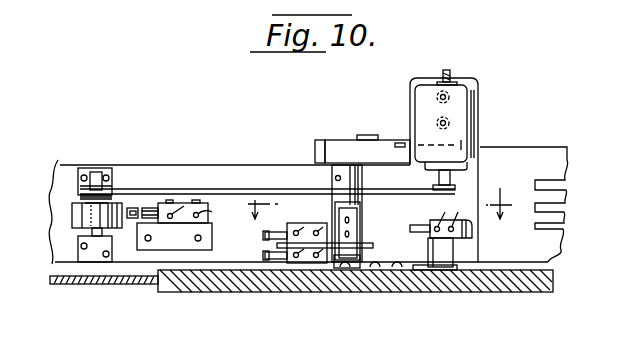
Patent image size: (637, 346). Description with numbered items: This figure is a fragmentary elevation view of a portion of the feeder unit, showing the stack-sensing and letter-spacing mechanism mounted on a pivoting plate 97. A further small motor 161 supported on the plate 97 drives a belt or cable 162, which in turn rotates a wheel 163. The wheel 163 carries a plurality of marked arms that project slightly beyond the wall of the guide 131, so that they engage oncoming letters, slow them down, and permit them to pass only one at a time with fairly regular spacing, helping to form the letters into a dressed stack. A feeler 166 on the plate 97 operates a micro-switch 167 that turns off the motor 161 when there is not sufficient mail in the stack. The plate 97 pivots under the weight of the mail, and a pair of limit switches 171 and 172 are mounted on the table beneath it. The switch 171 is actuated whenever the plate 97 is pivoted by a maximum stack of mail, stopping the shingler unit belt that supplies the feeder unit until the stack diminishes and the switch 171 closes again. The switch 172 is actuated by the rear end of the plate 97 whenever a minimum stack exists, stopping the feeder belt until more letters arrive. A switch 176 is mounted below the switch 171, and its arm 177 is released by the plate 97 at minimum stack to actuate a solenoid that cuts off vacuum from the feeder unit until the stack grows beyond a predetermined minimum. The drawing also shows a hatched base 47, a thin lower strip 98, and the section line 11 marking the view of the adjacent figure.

The guide 131 is at (58, 170).
The frame plate 47 is at (522, 148).
The strip 98 is at (115, 272).
The wheel 163 is at (78, 228).
The plate 97 is at (177, 167).
The feeler 166 is at (141, 208).
The micro-switch 167 is at (190, 208).
The belt or cable 162 is at (254, 190).
The limit switch 171 is at (293, 226).
The arm 177 is at (268, 260).
The switch 176 is at (314, 260).
The small motor 161 is at (470, 107).
The limit switch 172 is at (440, 224).
The section line 11- 11 is at (376, 218).